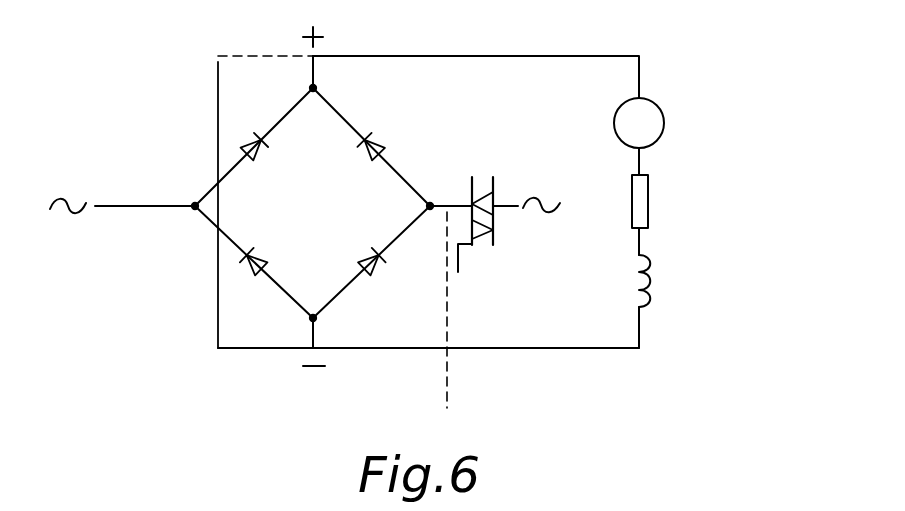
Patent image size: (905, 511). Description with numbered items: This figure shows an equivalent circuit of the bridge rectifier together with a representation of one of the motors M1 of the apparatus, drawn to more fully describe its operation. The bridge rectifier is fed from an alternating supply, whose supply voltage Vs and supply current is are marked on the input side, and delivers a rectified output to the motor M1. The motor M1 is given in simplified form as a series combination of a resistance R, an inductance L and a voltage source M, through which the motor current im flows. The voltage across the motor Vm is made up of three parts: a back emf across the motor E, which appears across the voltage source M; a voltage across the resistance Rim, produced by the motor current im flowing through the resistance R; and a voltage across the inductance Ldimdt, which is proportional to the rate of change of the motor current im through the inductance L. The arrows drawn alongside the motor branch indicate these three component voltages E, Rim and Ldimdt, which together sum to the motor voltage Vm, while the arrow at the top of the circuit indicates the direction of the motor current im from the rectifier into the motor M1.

The motor M1 is at (699, 212).
The voltage source M is at (639, 123).
The resistance R is at (626, 201).
The inductance L is at (631, 281).
The voltage across the motor Vm is at (218, 70).
The supply voltage Vs is at (120, 210).
The supply current is is at (152, 202).
The motor current im is at (470, 37).
The back emf across the motor E is at (677, 92).
The voltage across the resistance Rim is at (677, 180).
The voltage across the inductance Ldimdt is at (677, 270).